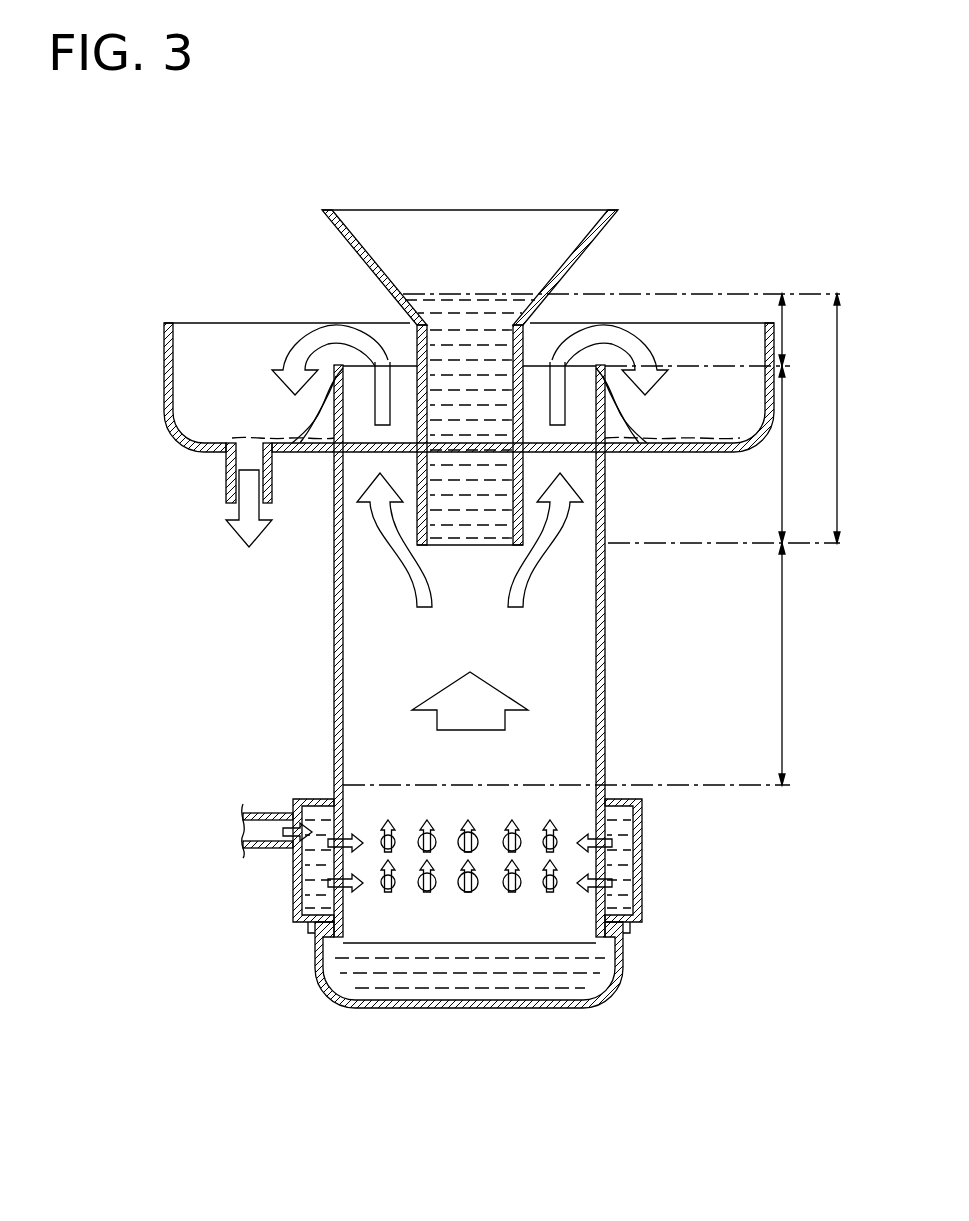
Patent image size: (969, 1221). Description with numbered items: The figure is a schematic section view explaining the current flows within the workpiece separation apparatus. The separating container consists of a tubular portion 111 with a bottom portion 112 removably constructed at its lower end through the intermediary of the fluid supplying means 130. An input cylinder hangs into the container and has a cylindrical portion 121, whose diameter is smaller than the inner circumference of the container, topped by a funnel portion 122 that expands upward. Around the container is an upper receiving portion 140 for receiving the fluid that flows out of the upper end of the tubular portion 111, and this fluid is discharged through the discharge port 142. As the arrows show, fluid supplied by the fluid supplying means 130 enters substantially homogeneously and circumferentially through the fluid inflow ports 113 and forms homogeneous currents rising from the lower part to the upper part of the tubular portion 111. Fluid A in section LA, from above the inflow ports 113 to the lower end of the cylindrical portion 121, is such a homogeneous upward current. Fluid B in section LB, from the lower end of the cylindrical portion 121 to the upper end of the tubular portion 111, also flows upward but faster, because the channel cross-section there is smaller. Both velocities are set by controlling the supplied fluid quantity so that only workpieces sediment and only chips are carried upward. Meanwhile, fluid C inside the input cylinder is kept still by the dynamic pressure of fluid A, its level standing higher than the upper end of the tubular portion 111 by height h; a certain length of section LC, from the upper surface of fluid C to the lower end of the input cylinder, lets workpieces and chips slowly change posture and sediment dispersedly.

The tubular portion 111 is at (334, 630).
The bottom portion 112 is at (387, 1008).
The fluid inflow ports 113 is at (383, 833).
The cylindrical portion 121 is at (553, 310).
The funnel portion 122 is at (383, 268).
The fluid supplying means 130 is at (638, 858).
The upper receiving portion 140 is at (164, 382).
The discharge port 142 is at (243, 461).
The fluid A is at (355, 700).
The fluid B is at (360, 406).
The fluid C is at (459, 381).
The height h is at (791, 330).
The section LA is at (798, 664).
The section LB is at (797, 454).
The section LC is at (852, 418).